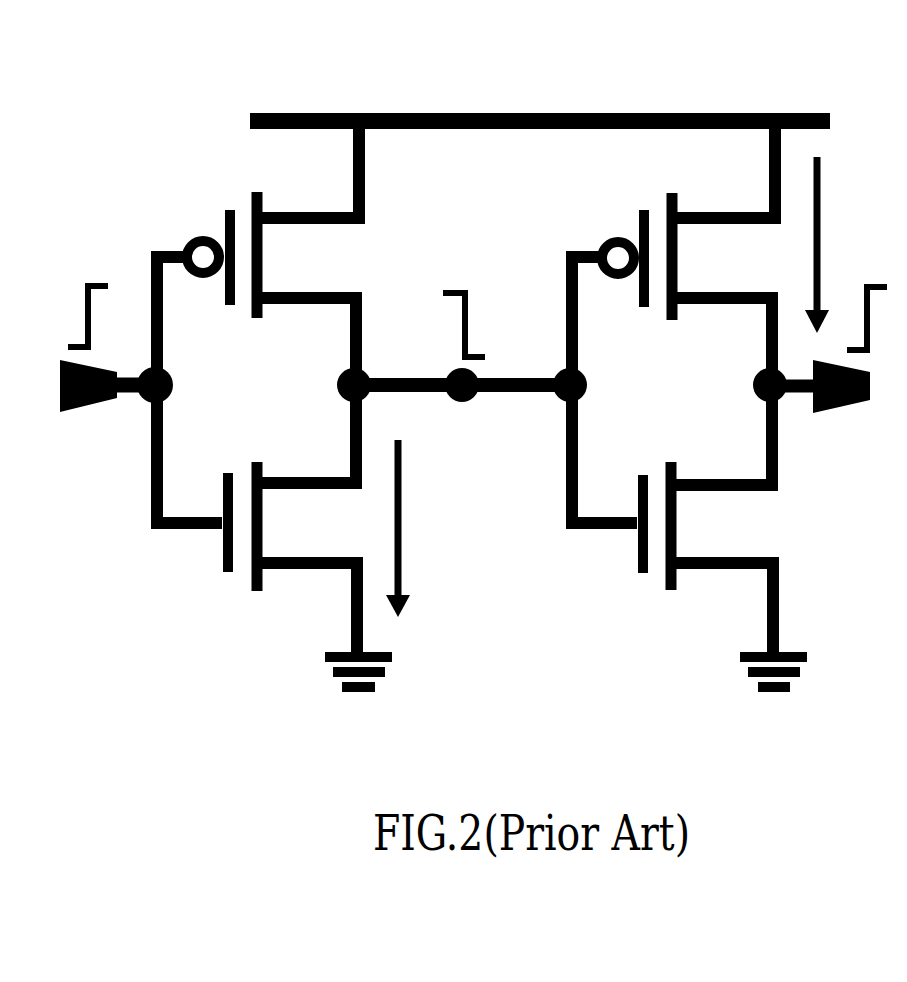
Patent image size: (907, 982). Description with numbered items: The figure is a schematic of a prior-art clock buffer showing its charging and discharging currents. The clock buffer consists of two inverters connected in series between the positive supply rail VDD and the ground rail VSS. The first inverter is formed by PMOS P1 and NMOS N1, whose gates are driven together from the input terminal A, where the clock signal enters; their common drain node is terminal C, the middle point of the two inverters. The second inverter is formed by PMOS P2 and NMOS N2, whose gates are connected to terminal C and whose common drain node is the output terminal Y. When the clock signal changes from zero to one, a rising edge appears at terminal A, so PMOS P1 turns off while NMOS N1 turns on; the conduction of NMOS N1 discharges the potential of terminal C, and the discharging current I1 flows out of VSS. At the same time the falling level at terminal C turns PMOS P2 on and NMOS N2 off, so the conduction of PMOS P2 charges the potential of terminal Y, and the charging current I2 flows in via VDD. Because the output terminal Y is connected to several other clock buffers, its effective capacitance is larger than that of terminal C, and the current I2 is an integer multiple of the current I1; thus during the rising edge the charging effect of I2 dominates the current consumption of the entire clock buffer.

The element VDD is at (540, 78).
The element VSS is at (566, 690).
The PMOS P1 is at (258, 253).
The NMOS N1 is at (257, 521).
The PMOS P2 is at (673, 253).
The NMOS N2 is at (672, 521).
The terminal A is at (116, 373).
The terminal C is at (462, 377).
The terminal Y is at (820, 376).
The current I1 is at (418, 528).
The current I2 is at (836, 245).